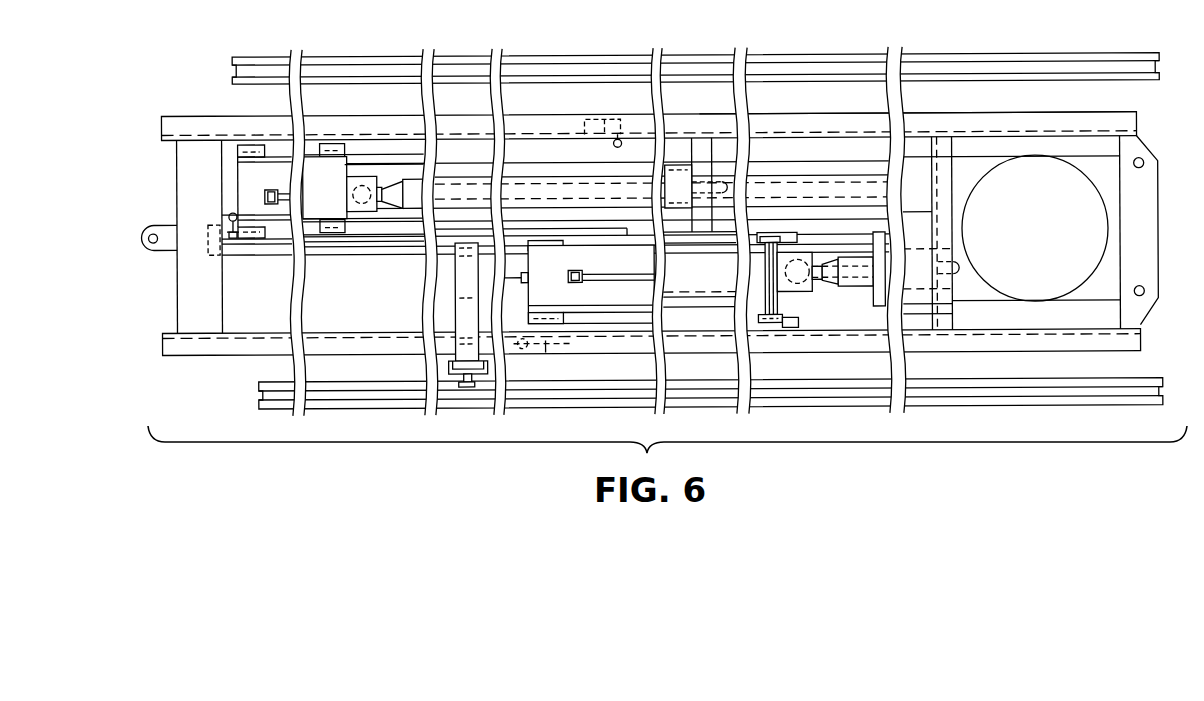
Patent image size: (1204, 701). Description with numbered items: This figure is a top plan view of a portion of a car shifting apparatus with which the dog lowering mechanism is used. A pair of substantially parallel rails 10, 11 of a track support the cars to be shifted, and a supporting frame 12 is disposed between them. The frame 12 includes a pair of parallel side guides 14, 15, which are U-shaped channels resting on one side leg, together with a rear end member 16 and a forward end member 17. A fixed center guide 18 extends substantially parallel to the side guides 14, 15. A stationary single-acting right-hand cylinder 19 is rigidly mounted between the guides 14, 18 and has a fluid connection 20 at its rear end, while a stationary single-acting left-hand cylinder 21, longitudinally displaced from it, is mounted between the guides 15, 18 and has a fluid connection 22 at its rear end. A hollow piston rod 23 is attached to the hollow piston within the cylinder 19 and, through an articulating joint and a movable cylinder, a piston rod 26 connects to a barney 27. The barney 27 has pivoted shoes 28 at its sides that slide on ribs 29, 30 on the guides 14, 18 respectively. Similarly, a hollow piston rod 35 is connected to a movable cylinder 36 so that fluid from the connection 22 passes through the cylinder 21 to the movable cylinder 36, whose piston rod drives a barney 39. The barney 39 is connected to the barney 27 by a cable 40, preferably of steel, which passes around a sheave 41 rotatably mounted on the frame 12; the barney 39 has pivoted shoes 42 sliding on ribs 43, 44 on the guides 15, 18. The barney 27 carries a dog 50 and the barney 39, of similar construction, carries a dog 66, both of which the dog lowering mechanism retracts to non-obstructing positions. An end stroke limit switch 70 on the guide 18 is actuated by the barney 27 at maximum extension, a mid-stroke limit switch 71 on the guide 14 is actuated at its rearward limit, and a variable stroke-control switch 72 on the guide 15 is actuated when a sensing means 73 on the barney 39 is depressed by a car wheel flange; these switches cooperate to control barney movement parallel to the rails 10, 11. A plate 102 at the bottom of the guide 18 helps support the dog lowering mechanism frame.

The rail 10 is at (787, 53).
The rail 11 is at (352, 400).
The supporting frame 12 is at (936, 119).
The side guide 14 is at (520, 116).
The side guide 15 is at (207, 355).
The rear end member 16 is at (1148, 243).
The forward end member 17 is at (175, 168).
The center guide 18 is at (877, 228).
The stationary single-acting cylinder 19 is at (673, 163).
The fluid connection 20 is at (723, 180).
The stationary single-acting cylinder 21 is at (925, 285).
The fluid connection 22 is at (953, 272).
The hollow piston rod 23 is at (451, 178).
The piston rod 26 is at (418, 202).
The barney 27 is at (337, 205).
The pivoted shoes 28 is at (250, 143).
The rib 29 is at (361, 153).
The rib 30 is at (375, 223).
The hollow piston rod 35 is at (860, 283).
The movable cylinder 36 is at (695, 280).
The barney 39 is at (638, 297).
The cable 40 is at (413, 158).
The sheave 41 is at (1060, 292).
The pivoted shoes 42 is at (560, 325).
The rib 43 is at (787, 323).
The rib 44 is at (797, 235).
The dog 50 is at (283, 188).
The dog 66 is at (593, 278).
The end stroke limit switch 70 is at (218, 250).
The mid-stroke limit switch 71 is at (608, 118).
The variable stroke-control switch 72 is at (547, 358).
The sensing means 73 is at (462, 280).
The plate 102 is at (765, 215).